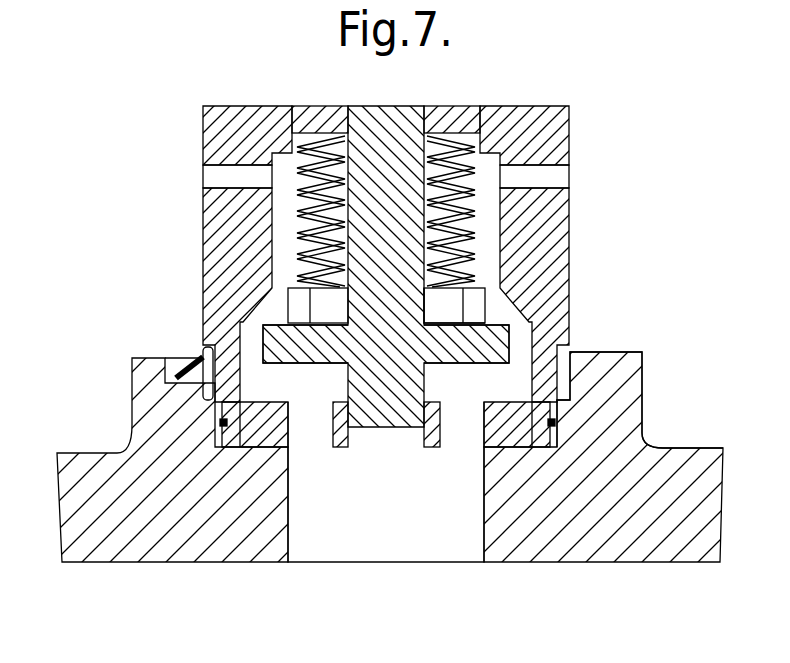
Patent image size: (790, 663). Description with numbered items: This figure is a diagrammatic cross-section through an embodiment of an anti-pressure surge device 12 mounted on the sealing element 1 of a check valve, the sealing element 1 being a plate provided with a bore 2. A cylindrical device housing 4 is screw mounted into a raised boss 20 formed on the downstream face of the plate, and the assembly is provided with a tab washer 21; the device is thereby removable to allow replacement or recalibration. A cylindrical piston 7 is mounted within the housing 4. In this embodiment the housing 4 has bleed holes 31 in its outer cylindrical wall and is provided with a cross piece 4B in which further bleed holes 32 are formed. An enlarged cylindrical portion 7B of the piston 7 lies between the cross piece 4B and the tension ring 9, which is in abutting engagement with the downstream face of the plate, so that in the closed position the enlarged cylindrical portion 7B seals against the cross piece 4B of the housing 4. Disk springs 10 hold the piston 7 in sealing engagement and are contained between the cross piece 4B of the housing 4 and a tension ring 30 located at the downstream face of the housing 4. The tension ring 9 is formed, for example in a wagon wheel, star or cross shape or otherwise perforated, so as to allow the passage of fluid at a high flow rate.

The sealing element 1 is at (693, 537).
The bore 2 is at (317, 535).
The device housing 4 is at (550, 210).
The cross piece 4B is at (445, 308).
The piston 7 is at (357, 134).
The enlarged cylindrical portion 7B is at (497, 342).
The tension ring 9 is at (255, 430).
The disk springs 10 is at (300, 216).
The anti-pressure surge device 12 is at (173, 133).
The raised boss 20 is at (620, 392).
The tab washer 21 is at (196, 352).
The tension ring 30 is at (458, 107).
The bleed holes 31 is at (567, 165).
The bleed holes 32 is at (478, 304).